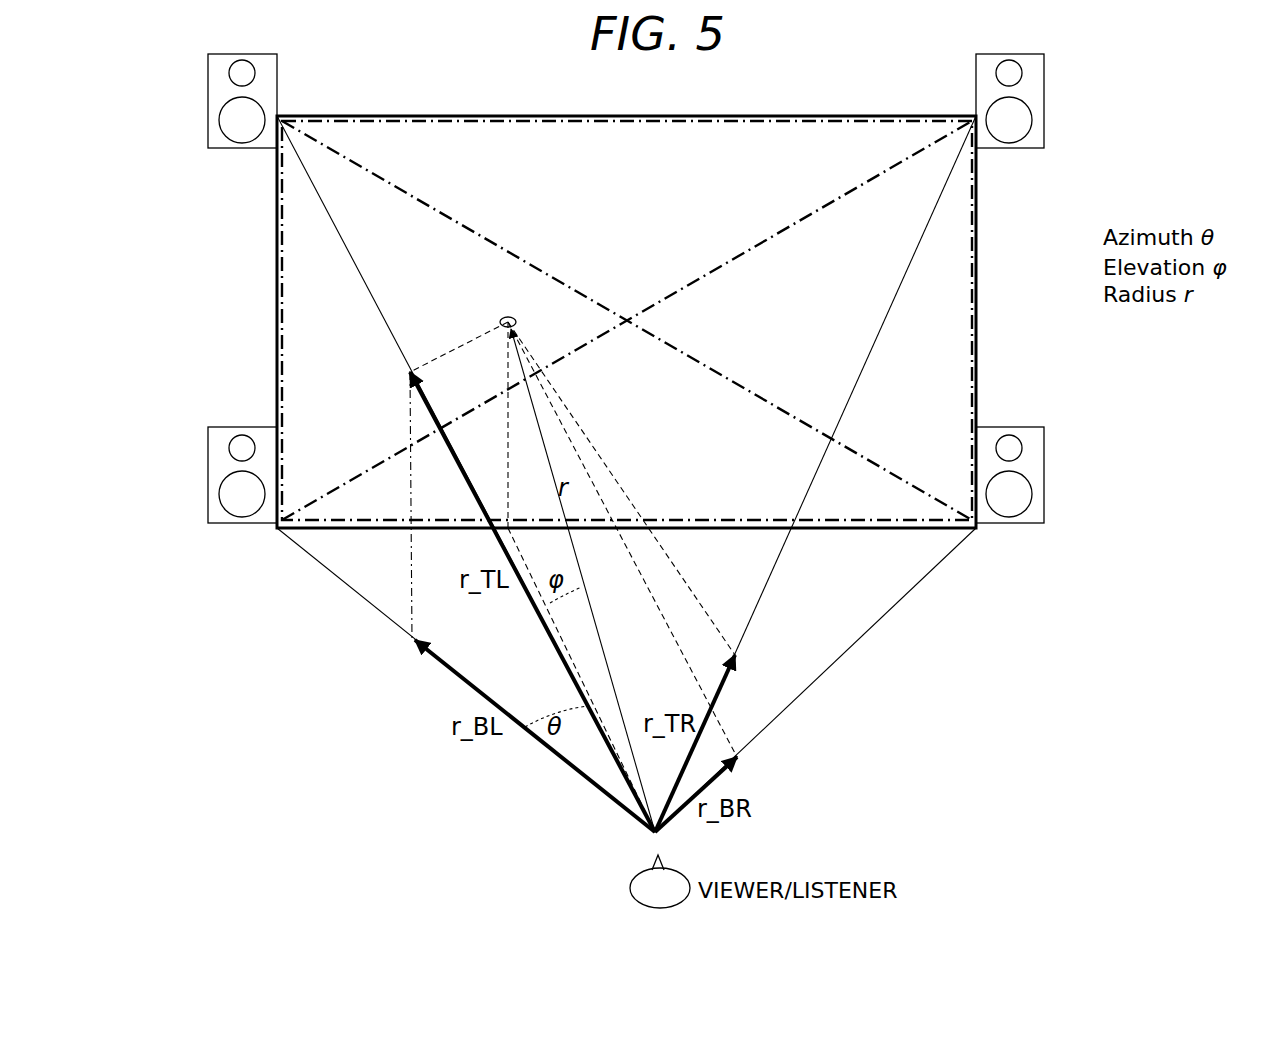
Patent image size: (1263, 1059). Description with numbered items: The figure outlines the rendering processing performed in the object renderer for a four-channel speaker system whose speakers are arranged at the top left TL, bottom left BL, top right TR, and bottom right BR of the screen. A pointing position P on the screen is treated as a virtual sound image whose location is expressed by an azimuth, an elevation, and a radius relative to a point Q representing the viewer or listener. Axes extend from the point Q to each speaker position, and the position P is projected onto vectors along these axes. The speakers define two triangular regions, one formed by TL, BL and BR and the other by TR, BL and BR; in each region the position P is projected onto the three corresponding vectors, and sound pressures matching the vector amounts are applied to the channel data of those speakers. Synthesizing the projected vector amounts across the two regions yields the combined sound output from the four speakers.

The top left speaker TL is at (260, 101).
The top right speaker TR is at (991, 101).
The bottom left speaker BL is at (244, 495).
The bottom right speaker BR is at (1007, 500).
The pointing position P is at (492, 306).
The viewer/listener point Q is at (655, 874).